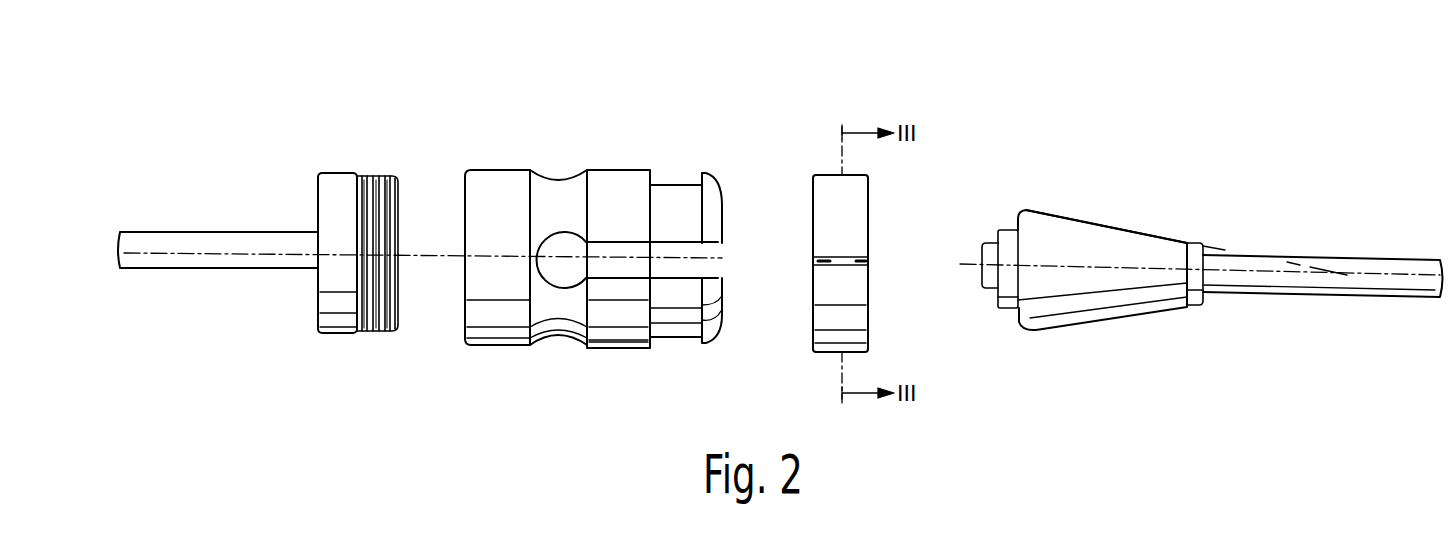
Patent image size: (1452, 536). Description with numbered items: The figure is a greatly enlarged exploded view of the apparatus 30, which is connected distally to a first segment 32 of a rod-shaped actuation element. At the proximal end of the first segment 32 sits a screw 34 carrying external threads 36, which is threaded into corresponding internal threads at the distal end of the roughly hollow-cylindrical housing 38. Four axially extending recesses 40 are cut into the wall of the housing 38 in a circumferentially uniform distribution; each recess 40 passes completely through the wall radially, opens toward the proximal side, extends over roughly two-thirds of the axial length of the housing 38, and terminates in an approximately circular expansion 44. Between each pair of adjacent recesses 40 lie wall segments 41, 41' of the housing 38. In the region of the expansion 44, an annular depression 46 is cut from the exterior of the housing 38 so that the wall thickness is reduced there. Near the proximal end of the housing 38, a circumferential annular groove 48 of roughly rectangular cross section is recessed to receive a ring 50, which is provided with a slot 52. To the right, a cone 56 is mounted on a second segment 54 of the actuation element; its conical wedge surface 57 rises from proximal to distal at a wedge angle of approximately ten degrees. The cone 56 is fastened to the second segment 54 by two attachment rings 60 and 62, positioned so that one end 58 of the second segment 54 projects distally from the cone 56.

The apparatus 30 is at (1015, 142).
The first segment 32 is at (212, 262).
The screw 34 is at (342, 198).
The external threads 36 is at (379, 177).
The housing 38 is at (503, 185).
The recess 40 is at (717, 253).
The segment 41 is at (622, 223).
The segment 41' is at (615, 395).
The circular expansion 44 is at (550, 267).
The annular depression 46 is at (560, 178).
The annular groove 48 is at (675, 333).
The ring 50 is at (855, 218).
The slot 52 is at (866, 262).
The second segment 54 is at (1415, 287).
The cone 56 is at (1143, 248).
The conical wedge surface 57 is at (1092, 217).
The end of segment 58 is at (985, 279).
The attachment ring 60 is at (1008, 300).
The attachment ring 62 is at (1195, 310).